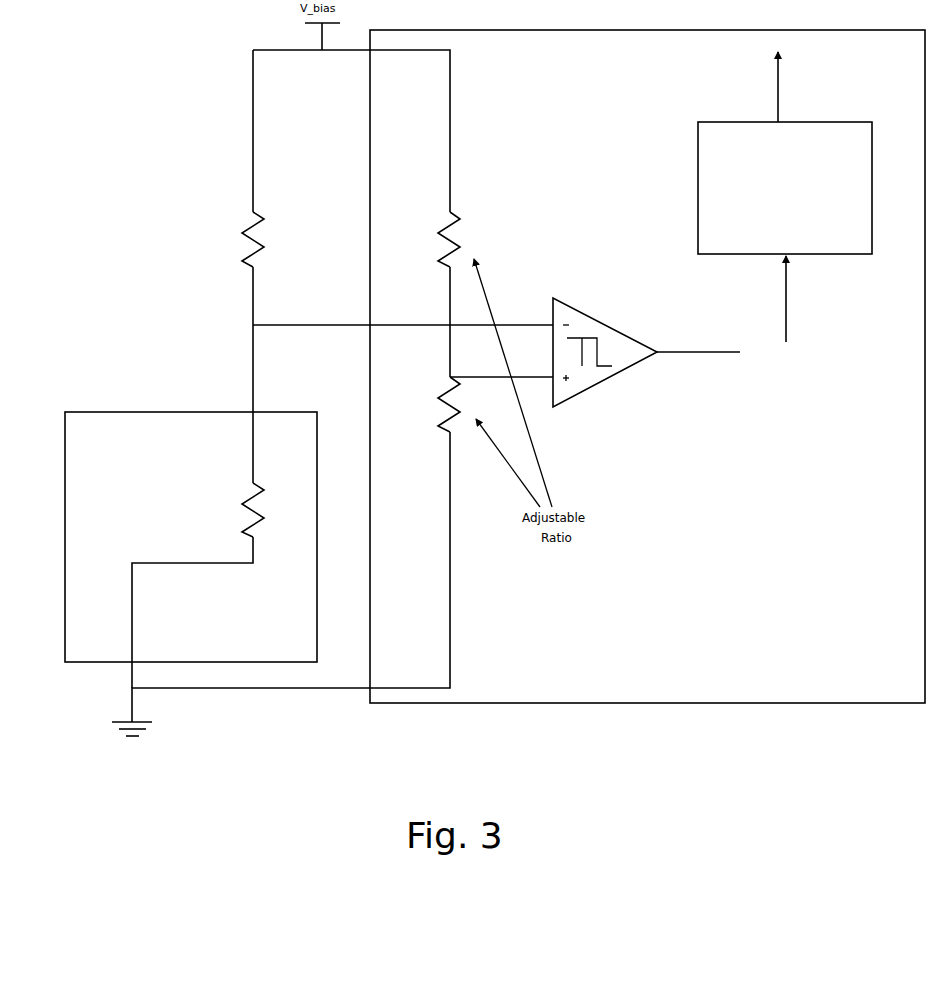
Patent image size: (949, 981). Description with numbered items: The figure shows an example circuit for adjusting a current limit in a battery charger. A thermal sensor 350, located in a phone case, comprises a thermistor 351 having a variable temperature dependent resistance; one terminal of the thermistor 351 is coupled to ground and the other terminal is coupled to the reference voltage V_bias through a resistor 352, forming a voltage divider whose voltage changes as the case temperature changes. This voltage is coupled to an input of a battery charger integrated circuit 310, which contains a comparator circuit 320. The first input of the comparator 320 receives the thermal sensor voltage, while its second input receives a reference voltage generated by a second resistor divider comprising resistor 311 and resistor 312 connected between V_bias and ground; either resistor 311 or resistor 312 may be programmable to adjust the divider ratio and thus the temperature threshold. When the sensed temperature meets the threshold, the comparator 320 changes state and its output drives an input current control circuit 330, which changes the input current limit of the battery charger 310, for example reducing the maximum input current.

The battery charger integrated circuit 310 is at (698, 29).
The resistor 311 is at (466, 235).
The resistor 312 is at (446, 410).
The comparator circuit 320 is at (555, 297).
The input current control circuit 330 is at (740, 121).
The thermal sensor 350 is at (76, 411).
The thermistor 351 is at (262, 498).
The resistor 352 is at (270, 230).